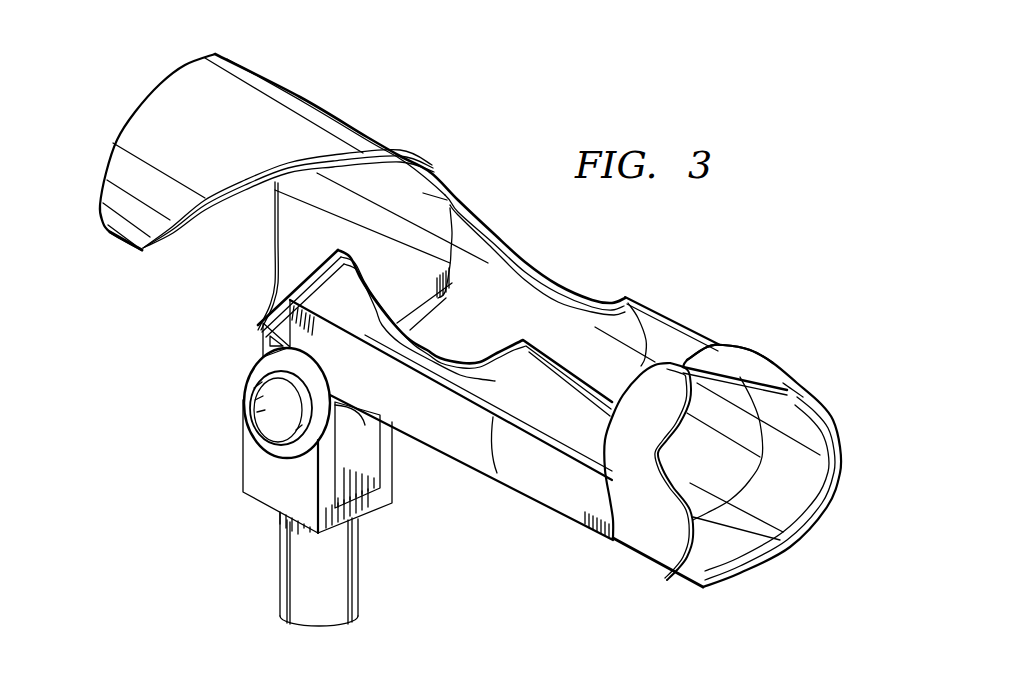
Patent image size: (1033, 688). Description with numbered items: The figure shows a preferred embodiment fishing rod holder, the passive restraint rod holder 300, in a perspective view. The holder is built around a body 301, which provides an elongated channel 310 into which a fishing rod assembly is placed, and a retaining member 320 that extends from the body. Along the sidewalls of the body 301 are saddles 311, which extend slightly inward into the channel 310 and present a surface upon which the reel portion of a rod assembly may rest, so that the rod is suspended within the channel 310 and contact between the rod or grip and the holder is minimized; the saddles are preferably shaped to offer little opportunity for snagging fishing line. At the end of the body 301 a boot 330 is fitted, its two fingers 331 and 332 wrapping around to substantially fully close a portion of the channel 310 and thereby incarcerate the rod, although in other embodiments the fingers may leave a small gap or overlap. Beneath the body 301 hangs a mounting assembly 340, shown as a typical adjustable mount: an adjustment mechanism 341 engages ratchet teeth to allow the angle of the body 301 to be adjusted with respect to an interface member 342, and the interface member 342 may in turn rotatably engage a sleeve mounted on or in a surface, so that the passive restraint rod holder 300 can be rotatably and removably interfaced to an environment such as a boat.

The passive restraint rod holder 300 is at (753, 261).
The body 301 is at (478, 453).
The channel 310 is at (667, 337).
The saddles 311 is at (533, 277).
The retaining member 320 is at (172, 83).
The boot 330 is at (640, 565).
The finger 331 is at (627, 396).
The finger 332 is at (747, 360).
The mounting assembly 340 is at (253, 472).
The adjustment mechanism 341 is at (400, 430).
The interface member 342 is at (280, 577).